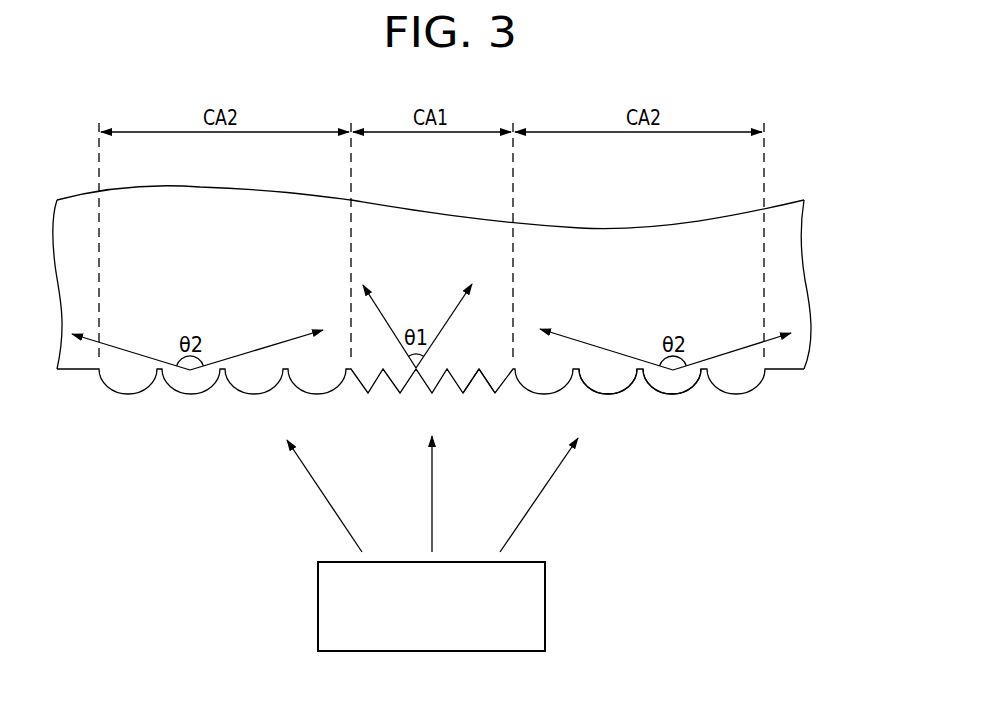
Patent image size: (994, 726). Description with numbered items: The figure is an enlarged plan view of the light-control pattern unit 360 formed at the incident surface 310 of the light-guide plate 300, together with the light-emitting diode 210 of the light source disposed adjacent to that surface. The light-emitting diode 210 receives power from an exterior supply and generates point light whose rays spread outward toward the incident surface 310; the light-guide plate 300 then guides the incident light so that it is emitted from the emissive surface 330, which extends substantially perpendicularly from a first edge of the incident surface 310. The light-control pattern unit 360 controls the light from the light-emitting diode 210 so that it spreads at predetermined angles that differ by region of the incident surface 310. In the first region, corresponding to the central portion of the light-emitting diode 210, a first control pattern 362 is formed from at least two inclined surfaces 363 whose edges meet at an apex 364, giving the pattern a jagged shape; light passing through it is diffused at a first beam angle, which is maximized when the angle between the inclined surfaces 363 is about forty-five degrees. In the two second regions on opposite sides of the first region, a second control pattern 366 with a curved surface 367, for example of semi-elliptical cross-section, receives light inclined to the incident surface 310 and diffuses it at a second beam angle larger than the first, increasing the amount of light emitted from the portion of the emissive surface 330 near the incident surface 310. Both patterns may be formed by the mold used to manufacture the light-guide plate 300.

The light-emitting diode 210 is at (539, 605).
The light-guide plate 300 is at (441, 316).
The incident surface 310 is at (432, 340).
The emissive surface 330 is at (782, 213).
The light-control pattern unit 360 is at (430, 340).
The first control pattern 362 is at (535, 467).
The inclined surfaces 363 is at (467, 394).
The apex 364 is at (494, 394).
The second control pattern 366 is at (696, 397).
The curved surface 367 is at (609, 394).